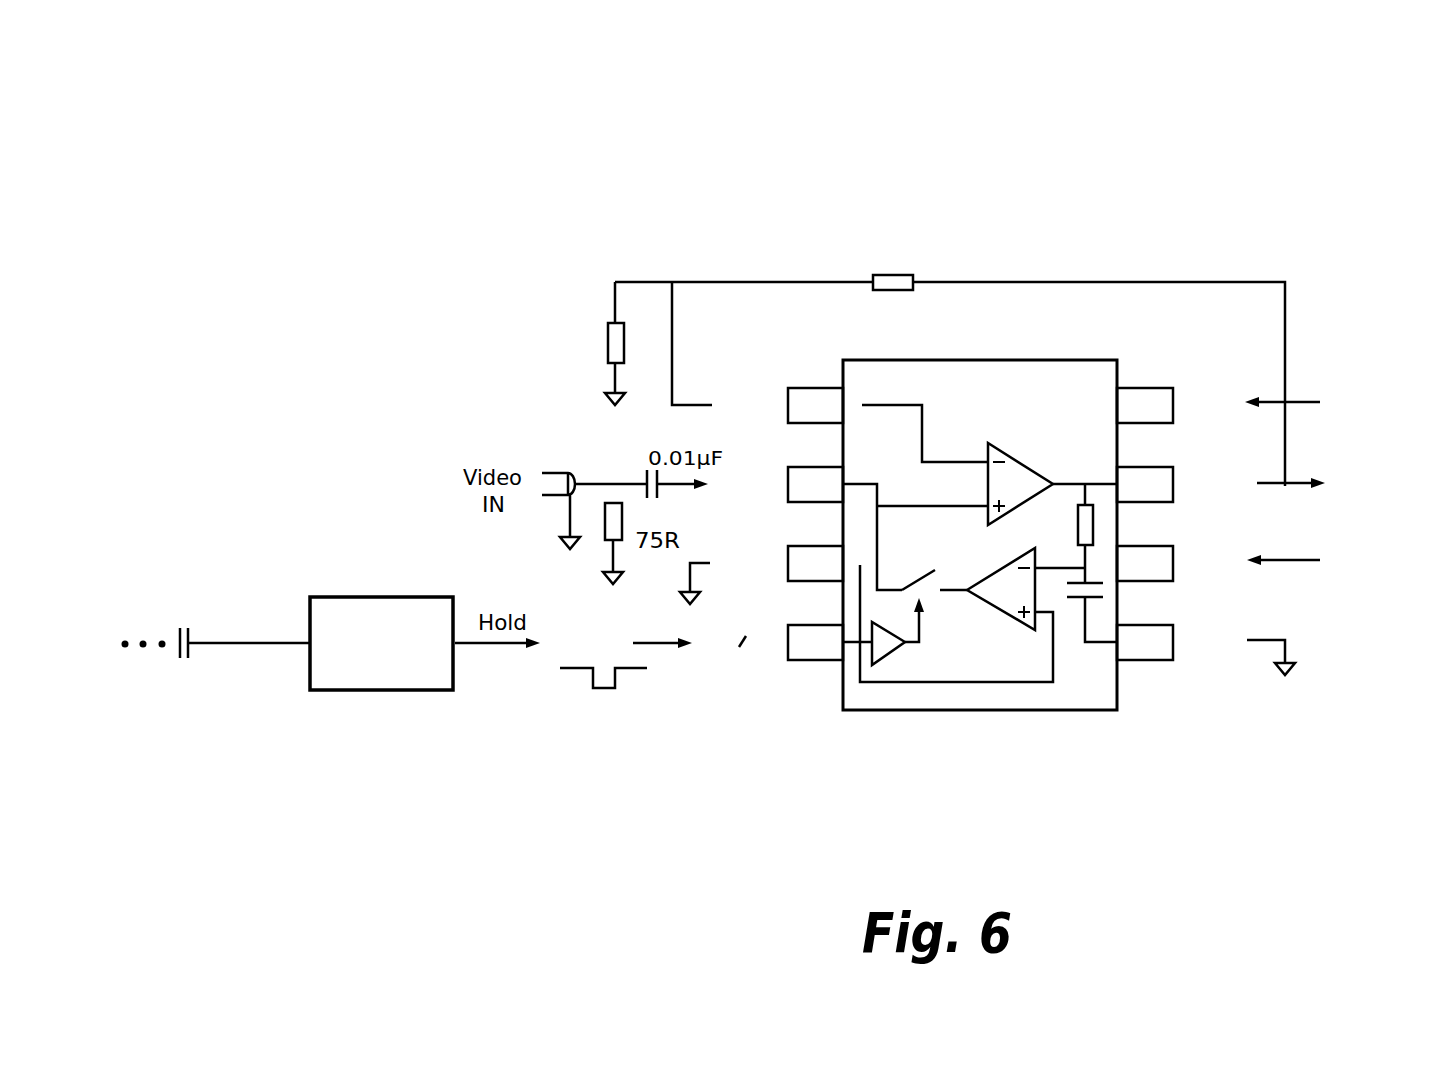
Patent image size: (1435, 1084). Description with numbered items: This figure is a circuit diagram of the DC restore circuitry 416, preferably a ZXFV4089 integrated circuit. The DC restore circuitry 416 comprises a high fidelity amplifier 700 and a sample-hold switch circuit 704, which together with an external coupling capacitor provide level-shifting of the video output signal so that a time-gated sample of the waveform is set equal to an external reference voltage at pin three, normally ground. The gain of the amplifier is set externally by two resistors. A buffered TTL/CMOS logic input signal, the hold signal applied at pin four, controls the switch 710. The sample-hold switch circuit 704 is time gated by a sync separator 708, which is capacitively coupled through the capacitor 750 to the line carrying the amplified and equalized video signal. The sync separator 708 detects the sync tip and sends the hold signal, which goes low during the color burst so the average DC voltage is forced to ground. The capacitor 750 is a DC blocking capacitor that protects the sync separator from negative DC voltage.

The DC restore circuitry 416 is at (979, 201).
The high fidelity amplifier 700 is at (1022, 462).
The sample-hold switch circuit 704 is at (939, 658).
The switch 710 is at (918, 580).
The sync separator 708 is at (355, 597).
The capacitor 750 is at (182, 667).